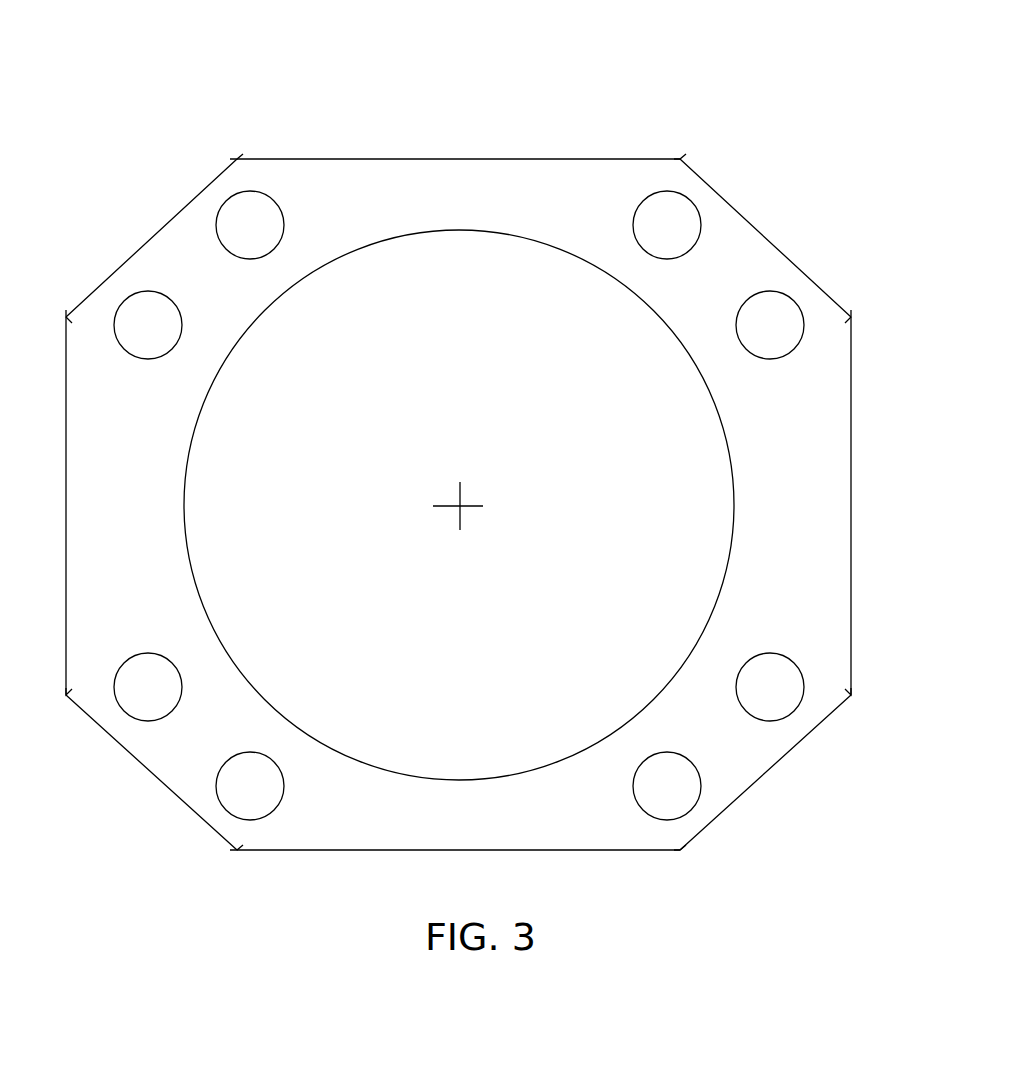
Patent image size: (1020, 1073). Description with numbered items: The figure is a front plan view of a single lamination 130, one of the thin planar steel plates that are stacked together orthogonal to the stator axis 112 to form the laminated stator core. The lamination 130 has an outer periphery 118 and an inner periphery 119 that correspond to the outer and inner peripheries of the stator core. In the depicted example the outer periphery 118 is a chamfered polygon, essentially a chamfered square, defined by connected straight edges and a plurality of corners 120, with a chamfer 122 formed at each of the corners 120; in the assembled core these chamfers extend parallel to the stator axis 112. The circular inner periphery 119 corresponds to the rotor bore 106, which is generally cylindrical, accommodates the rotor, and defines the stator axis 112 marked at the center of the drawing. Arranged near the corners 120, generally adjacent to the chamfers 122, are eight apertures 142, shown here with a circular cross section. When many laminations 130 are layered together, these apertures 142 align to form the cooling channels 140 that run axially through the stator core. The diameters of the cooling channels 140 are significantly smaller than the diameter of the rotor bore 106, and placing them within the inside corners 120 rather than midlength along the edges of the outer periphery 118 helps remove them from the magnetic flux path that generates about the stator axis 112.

The lamination 130 is at (333, 92).
The outer periphery 118 is at (525, 159).
The corner 120 is at (237, 159).
The chamfer 122 is at (163, 229).
The inner periphery 119 is at (459, 230).
The rotor bore 106 is at (434, 760).
The stator axis 112 is at (460, 507).
The cooling channel 140 is at (476, 505).
The aperture 142 is at (804, 325).